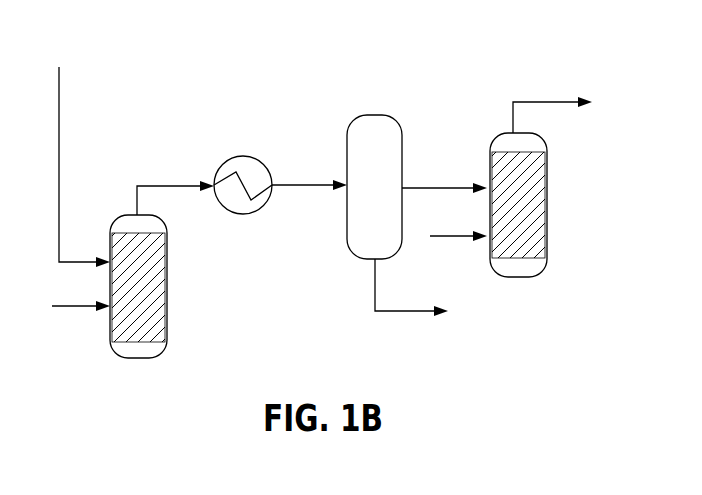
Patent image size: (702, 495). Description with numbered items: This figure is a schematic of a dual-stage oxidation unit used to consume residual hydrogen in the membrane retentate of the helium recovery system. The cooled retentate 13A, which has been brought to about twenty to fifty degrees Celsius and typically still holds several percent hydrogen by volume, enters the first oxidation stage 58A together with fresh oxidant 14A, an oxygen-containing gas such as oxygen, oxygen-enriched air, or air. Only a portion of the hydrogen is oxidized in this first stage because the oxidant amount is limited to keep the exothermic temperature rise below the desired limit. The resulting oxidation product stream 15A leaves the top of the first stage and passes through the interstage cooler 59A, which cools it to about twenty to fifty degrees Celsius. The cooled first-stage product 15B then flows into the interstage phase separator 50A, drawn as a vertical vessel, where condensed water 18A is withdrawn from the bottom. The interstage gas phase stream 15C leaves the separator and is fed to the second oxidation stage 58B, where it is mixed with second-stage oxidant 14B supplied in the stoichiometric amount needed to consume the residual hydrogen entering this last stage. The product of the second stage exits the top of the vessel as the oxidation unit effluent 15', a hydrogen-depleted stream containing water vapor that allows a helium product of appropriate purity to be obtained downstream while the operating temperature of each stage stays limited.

The cooled retentate 13A is at (84, 167).
The fresh oxidant 14A is at (81, 313).
The first oxidation stage 58A is at (138, 286).
The oxidation product stream 15A is at (175, 198).
The interstage cooler 59A is at (243, 198).
The cooled first-stage product 15B is at (309, 195).
The separator 50A is at (374, 187).
The interstage gas phase stream 15C is at (444, 197).
The second-stage oxidant 14B is at (458, 243).
The condensed water 18A is at (411, 300).
The second oxidation stage 58B is at (518, 205).
The product stream 15' is at (552, 115).